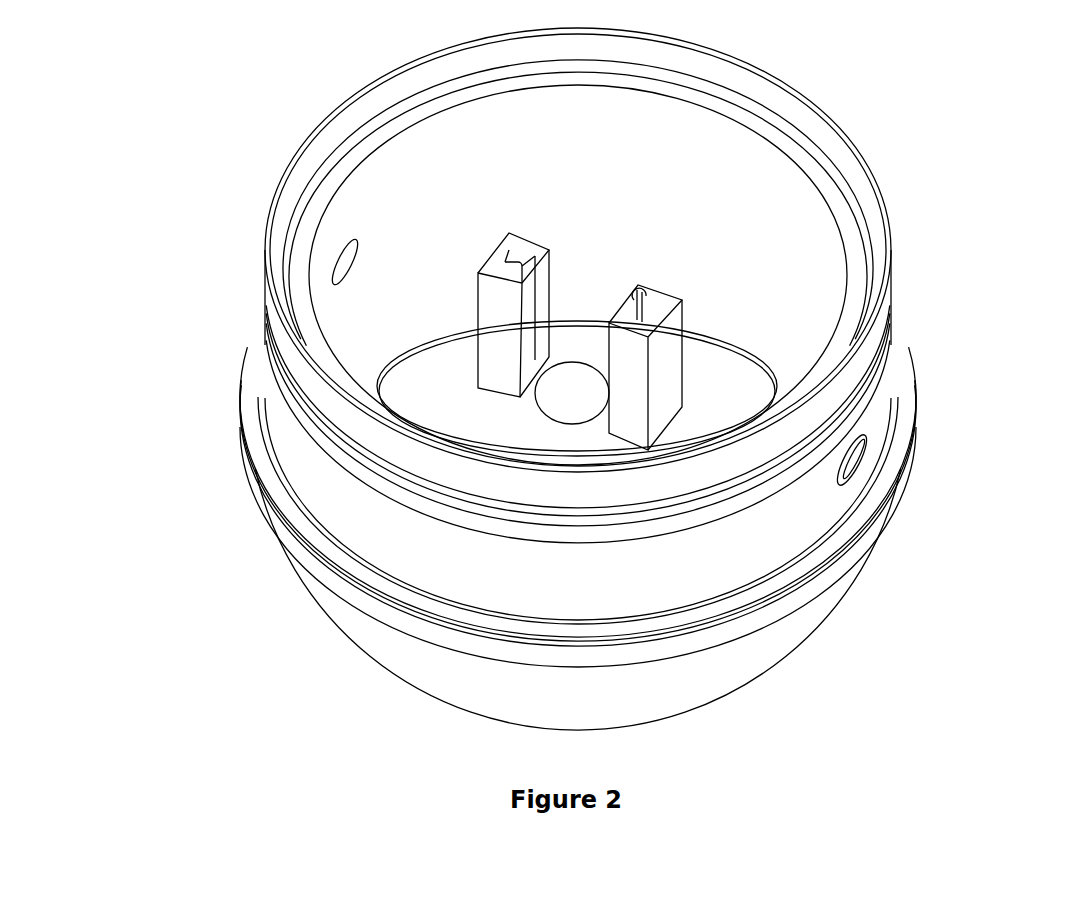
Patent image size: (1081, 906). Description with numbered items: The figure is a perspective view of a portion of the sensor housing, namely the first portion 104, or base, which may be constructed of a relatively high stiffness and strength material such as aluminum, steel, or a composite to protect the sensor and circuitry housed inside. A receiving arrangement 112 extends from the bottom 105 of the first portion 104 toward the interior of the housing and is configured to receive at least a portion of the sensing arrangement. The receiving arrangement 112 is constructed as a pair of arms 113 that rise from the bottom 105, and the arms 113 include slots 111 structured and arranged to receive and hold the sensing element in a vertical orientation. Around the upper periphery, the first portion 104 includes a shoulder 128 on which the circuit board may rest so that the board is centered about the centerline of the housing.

The first portion 104 is at (723, 209).
The bottom 105 is at (442, 397).
The slots 111 is at (533, 262).
The receiving arrangement 112 is at (692, 380).
The arms 113 is at (498, 332).
The shoulder 128 is at (322, 132).